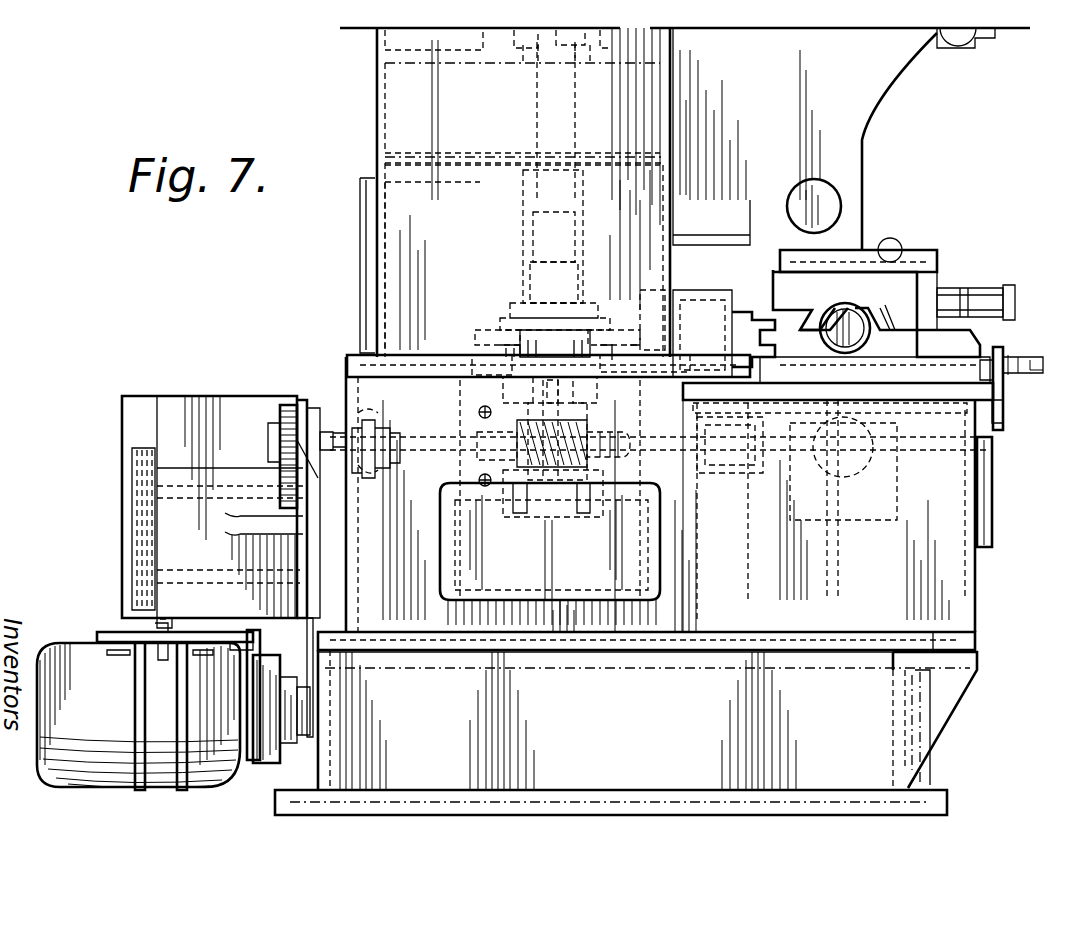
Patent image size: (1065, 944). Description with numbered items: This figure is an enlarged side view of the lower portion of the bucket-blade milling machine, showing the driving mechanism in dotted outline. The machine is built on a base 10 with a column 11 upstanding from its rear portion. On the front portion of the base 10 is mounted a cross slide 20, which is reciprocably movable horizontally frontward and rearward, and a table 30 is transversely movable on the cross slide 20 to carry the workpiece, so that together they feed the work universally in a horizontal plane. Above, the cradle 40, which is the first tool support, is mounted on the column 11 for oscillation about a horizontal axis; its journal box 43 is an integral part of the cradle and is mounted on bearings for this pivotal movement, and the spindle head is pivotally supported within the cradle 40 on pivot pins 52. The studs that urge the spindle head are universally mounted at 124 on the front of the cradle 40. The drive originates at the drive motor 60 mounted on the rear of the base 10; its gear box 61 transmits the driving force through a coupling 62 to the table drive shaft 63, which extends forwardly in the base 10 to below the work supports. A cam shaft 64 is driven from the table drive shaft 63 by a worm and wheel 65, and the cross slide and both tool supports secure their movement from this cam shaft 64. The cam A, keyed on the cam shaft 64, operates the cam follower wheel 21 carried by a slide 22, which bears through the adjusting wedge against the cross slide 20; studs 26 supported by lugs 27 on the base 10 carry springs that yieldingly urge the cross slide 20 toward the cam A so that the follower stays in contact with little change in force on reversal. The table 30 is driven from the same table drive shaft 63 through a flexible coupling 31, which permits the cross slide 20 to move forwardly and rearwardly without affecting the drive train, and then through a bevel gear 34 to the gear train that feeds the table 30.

The base 10 is at (952, 589).
The column 11 is at (366, 64).
The cross slide 20 is at (935, 358).
The cam follower wheel 21 is at (648, 330).
The slide 22 is at (742, 318).
The studs 26 is at (1025, 372).
The lugs 27 is at (992, 420).
The table 30 is at (893, 282).
The flexible coupling 31 is at (724, 478).
The bevel gear 34 is at (955, 430).
The cradle 40 is at (878, 68).
The journal box 43 is at (712, 240).
The pivot pins 52 is at (814, 180).
The drive motor 60 is at (66, 648).
The gear box 61 is at (200, 393).
The coupling 62 is at (360, 390).
The table drive shaft 63 is at (345, 410).
The cam shaft 64 is at (530, 100).
The worm and wheel 65 is at (629, 437).
The universal mounting 124 is at (968, 48).
The cam A is at (487, 325).